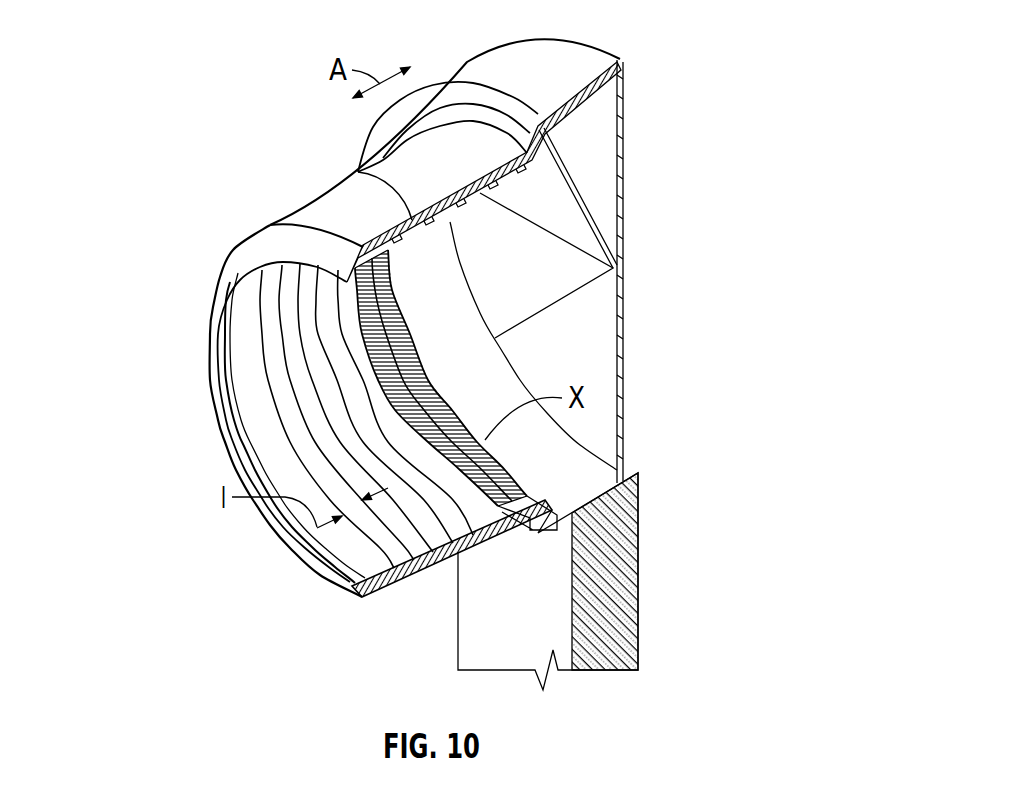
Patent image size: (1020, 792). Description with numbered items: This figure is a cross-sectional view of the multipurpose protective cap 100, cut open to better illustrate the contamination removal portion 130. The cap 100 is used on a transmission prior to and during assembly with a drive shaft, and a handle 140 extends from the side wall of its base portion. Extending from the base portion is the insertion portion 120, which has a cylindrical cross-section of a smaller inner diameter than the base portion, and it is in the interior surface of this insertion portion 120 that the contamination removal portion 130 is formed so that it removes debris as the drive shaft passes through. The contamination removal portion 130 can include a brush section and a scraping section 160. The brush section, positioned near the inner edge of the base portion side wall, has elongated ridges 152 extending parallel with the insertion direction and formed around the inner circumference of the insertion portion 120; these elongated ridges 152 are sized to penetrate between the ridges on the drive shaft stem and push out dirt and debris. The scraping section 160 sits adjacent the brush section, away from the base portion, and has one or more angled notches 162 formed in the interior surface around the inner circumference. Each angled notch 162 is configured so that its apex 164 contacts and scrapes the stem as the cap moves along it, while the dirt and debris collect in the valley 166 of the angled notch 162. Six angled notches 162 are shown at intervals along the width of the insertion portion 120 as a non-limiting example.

The multipurpose protective cap 100 is at (140, 62).
The insertion portion 120 is at (256, 210).
The contamination removal portion 130 is at (248, 338).
The handle 140 is at (638, 582).
The elongated ridges 152 is at (495, 473).
The scraping section 160 is at (430, 567).
The angled notch 162 is at (400, 418).
The apex 164 is at (444, 216).
The valley 166 is at (357, 172).